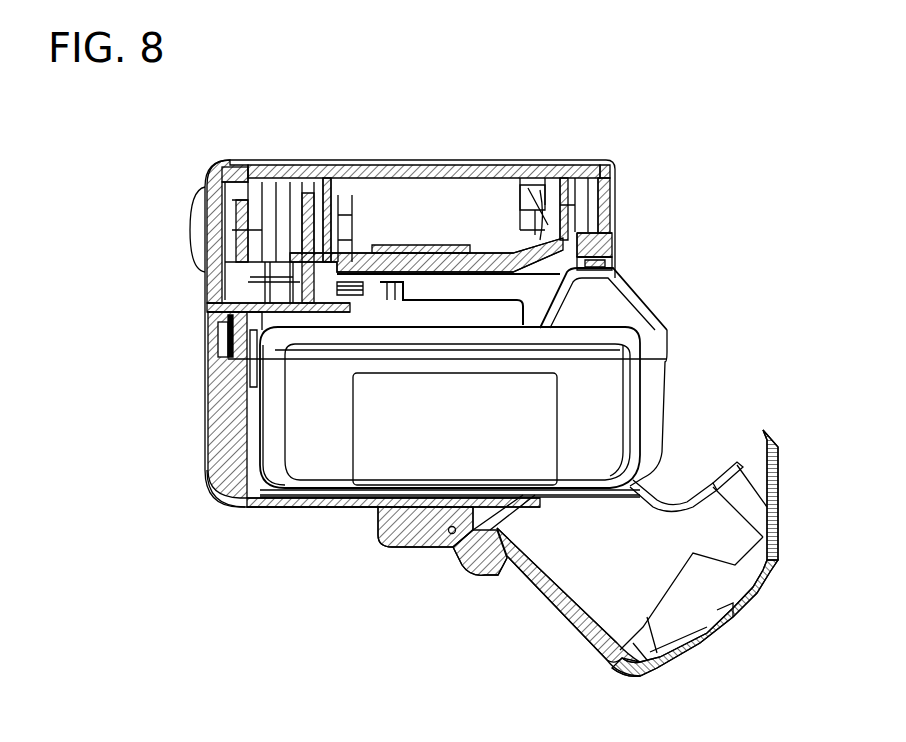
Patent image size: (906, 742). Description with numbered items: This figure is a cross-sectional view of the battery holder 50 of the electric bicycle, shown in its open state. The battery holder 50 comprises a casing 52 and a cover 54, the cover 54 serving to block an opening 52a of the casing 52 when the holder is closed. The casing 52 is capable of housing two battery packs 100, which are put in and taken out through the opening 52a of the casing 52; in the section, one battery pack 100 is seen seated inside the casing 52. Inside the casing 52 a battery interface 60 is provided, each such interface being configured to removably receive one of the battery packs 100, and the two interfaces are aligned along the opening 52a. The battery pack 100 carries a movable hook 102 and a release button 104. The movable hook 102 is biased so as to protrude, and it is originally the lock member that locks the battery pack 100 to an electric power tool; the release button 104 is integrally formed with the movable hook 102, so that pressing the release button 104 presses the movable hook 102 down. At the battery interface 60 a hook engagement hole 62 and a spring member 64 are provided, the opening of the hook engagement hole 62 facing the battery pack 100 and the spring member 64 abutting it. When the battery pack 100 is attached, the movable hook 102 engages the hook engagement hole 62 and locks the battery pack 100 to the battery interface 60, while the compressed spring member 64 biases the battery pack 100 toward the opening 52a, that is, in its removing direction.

The battery holder 50 is at (205, 158).
The casing 52 is at (612, 210).
The opening 52a is at (612, 278).
The cover 54 is at (778, 512).
The battery interface 60 is at (262, 497).
The hook engagement hole 62 is at (545, 215).
The spring member 64 is at (208, 378).
The battery pack 100 is at (652, 400).
The movable hook 102 is at (596, 250).
The release button 104 is at (652, 320).